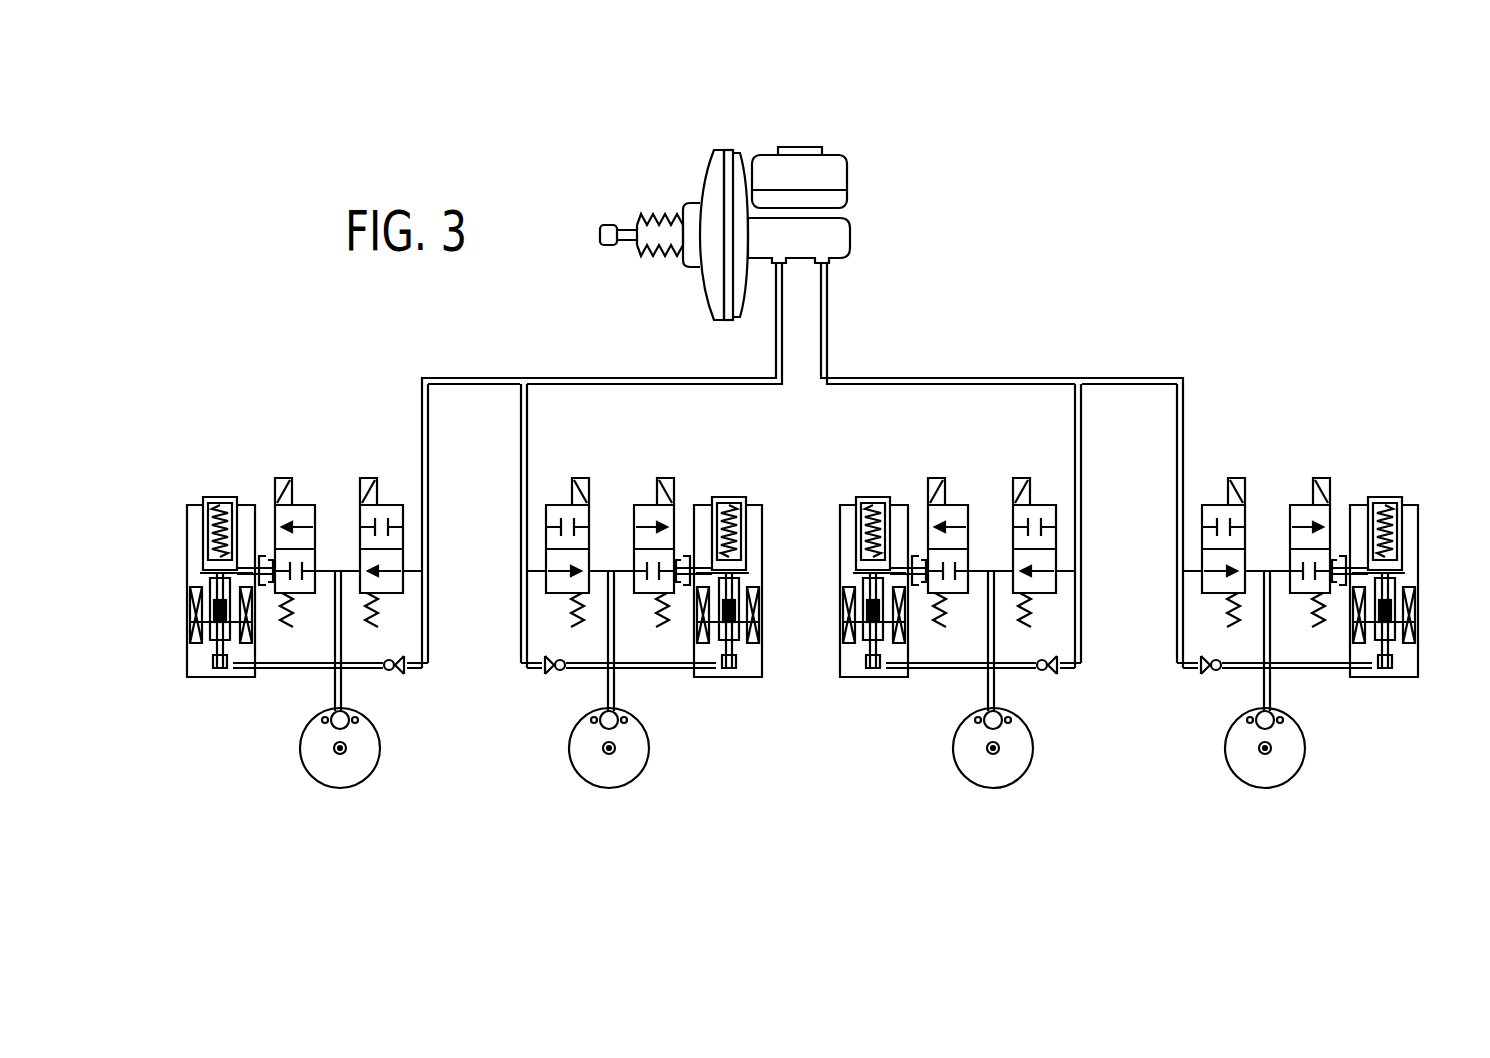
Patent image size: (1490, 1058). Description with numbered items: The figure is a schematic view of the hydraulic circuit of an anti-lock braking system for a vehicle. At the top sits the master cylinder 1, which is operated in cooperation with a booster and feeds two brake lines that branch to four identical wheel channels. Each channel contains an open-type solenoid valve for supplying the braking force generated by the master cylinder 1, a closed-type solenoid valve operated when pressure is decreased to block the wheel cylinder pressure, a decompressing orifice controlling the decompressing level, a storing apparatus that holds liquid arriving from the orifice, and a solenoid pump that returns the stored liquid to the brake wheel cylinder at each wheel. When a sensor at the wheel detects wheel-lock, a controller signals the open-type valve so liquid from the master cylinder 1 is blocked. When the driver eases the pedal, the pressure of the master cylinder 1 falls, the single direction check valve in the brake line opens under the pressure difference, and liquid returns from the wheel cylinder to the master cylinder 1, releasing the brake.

The master cylinder 1 is at (830, 240).